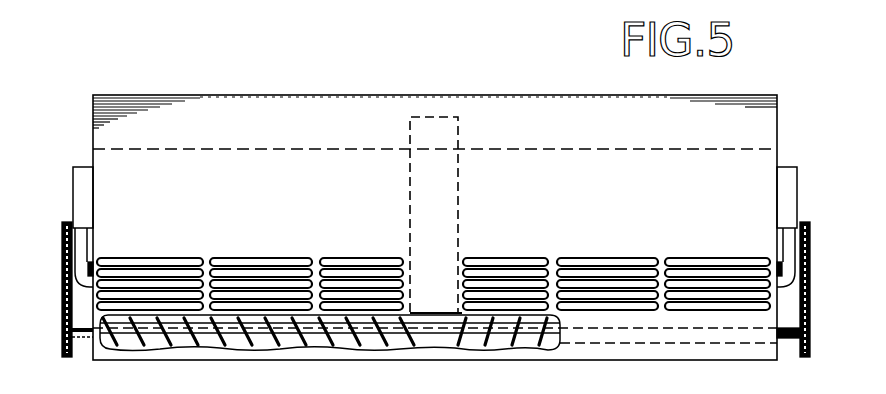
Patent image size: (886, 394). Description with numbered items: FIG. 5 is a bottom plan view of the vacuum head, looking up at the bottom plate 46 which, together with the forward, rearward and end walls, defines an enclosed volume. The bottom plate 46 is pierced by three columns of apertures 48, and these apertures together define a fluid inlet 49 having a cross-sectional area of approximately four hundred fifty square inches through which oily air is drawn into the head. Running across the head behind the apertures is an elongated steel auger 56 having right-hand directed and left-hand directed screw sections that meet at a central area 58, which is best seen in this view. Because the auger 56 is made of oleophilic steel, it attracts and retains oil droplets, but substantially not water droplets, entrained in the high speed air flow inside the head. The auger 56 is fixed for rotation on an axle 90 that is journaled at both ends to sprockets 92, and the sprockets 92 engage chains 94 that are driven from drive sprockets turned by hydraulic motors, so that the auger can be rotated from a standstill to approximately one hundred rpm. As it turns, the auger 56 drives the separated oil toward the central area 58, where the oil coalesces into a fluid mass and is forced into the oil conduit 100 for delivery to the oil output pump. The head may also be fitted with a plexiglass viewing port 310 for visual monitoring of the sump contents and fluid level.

The bottom plate 46 is at (720, 235).
The apertures 48 is at (608, 258).
The fluid inlet 49 is at (245, 235).
The auger 56 is at (472, 340).
The central area 58 is at (432, 345).
The axle 90 is at (788, 340).
The sprockets 92 is at (62, 340).
The chains 94 is at (62, 283).
The oil conduit 100 is at (455, 225).
The plexiglass viewing port 310 is at (330, 353).